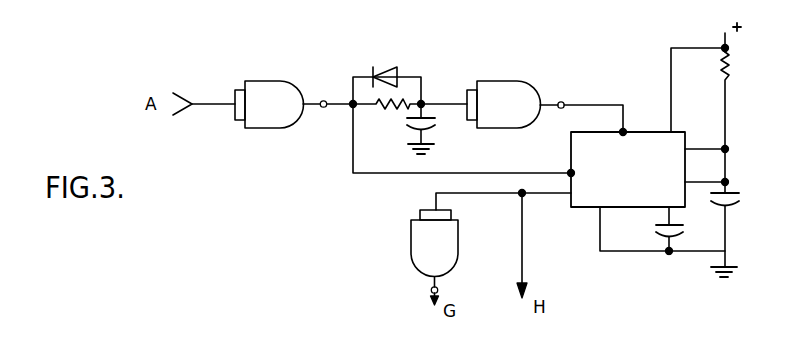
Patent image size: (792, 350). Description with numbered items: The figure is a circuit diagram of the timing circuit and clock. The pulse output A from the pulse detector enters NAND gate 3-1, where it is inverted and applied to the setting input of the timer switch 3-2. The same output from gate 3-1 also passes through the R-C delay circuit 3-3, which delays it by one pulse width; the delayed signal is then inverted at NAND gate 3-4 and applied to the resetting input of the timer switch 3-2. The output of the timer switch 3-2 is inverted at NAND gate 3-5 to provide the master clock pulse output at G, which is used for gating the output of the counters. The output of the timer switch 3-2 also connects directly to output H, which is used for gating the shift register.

The NAND gate 3-1 is at (273, 92).
The timer switch 3-2 is at (652, 130).
The R-C delay circuit 3-3 is at (428, 98).
The NAND gate 3-4 is at (522, 97).
The NAND gate 3-5 is at (418, 230).